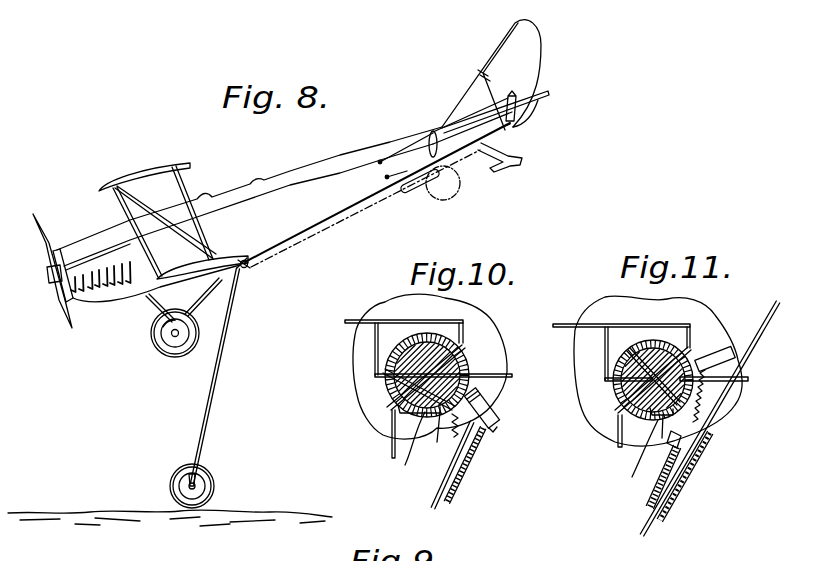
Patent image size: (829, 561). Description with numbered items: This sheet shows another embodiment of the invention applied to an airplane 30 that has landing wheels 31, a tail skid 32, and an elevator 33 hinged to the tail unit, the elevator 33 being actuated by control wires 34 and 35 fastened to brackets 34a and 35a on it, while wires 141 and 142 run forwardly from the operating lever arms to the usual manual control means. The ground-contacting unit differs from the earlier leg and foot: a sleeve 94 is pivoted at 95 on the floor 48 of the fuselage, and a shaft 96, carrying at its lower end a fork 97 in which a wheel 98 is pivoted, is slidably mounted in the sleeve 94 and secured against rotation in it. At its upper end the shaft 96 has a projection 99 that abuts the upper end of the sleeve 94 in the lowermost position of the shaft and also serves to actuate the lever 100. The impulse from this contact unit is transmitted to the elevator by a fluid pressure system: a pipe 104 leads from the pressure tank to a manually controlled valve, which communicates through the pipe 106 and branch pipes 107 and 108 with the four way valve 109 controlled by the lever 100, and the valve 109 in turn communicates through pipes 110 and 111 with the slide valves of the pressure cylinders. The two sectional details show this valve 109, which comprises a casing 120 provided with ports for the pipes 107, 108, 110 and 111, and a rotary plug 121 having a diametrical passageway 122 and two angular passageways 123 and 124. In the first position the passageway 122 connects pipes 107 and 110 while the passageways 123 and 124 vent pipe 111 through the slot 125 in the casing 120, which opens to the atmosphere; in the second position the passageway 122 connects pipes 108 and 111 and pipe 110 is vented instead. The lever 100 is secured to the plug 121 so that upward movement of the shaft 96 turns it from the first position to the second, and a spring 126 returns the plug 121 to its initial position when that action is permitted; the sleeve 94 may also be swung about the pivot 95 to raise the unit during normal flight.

In FIG. 8, the airplane 30 is at (323, 177).
In FIG. 8, the landing wheels 31 is at (158, 346).
In FIG. 8, the tail skid 32 is at (503, 166).
In FIG. 8, the elevator 33 is at (548, 94).
In FIG. 8, the control wire 34 is at (517, 53).
In FIG. 8, the bracket 34a is at (533, 83).
In FIG. 8, the control wire 35 is at (514, 124).
In FIG. 8, the bracket 35a is at (532, 112).
In FIG. 8, the floor of the fuselage 48 is at (353, 208).
In FIG. 10, the sleeve 94 is at (470, 470).
In FIG. 11, the sleeve 94 is at (679, 446).
In FIG. 8, the pivot 95 is at (254, 268).
In FIG. 8, the shaft 96 is at (331, 228).
In FIG. 10, the shaft 96 is at (431, 496).
In FIG. 11, the shaft 96 is at (718, 410).
In FIG. 8, the fork 97 is at (195, 470).
In FIG. 8, the wheel 98 is at (451, 198).
In FIG. 10, the projection 99 is at (491, 430).
In FIG. 10, the lever 100 is at (498, 418).
In FIG. 11, the lever 100 is at (722, 348).
In FIG. 8, the pipe 104 is at (170, 535).
In FIG. 10, the pipe 106 is at (357, 321).
In FIG. 11, the pipe 106 is at (585, 324).
In FIG. 10, the branch pipe 107 is at (375, 351).
In FIG. 11, the branch pipe 107 is at (605, 356).
In FIG. 10, the branch pipe 108 is at (466, 333).
In FIG. 11, the branch pipe 108 is at (677, 325).
In FIG. 10, the four way valve 109 is at (372, 401).
In FIG. 11, the four way valve 109 is at (602, 408).
In FIG. 10, the pipe 110 is at (507, 373).
In FIG. 11, the pipe 110 is at (738, 376).
In FIG. 10, the pipe 111 is at (389, 439).
In FIG. 11, the pipe 111 is at (617, 438).
In FIG. 10, the casing 120 is at (408, 336).
In FIG. 11, the casing 120 is at (633, 347).
In FIG. 10, the rotary plug 121 is at (438, 342).
In FIG. 11, the rotary plug 121 is at (653, 380).
In FIG. 10, the diametrical passageway 122 is at (462, 363).
In FIG. 11, the diametrical passageway 122 is at (692, 347).
In FIG. 10, the angular passageway 123 is at (419, 418).
In FIG. 11, the angular passageway 123 is at (653, 413).
In FIG. 10, the angular passageway 124 is at (436, 445).
In FIG. 11, the angular passageway 124 is at (663, 440).
In FIG. 10, the slot 125 is at (404, 462).
In FIG. 11, the slot 125 is at (636, 455).
In FIG. 10, the spring 126 is at (486, 400).
In FIG. 11, the spring 126 is at (684, 438).
In FIG. 8, the wire 141 is at (381, 161).
In FIG. 8, the wire 142 is at (410, 182).